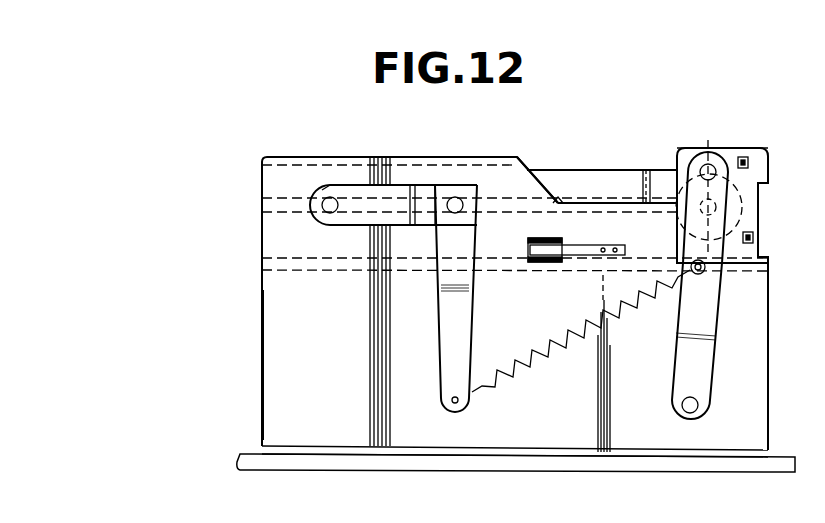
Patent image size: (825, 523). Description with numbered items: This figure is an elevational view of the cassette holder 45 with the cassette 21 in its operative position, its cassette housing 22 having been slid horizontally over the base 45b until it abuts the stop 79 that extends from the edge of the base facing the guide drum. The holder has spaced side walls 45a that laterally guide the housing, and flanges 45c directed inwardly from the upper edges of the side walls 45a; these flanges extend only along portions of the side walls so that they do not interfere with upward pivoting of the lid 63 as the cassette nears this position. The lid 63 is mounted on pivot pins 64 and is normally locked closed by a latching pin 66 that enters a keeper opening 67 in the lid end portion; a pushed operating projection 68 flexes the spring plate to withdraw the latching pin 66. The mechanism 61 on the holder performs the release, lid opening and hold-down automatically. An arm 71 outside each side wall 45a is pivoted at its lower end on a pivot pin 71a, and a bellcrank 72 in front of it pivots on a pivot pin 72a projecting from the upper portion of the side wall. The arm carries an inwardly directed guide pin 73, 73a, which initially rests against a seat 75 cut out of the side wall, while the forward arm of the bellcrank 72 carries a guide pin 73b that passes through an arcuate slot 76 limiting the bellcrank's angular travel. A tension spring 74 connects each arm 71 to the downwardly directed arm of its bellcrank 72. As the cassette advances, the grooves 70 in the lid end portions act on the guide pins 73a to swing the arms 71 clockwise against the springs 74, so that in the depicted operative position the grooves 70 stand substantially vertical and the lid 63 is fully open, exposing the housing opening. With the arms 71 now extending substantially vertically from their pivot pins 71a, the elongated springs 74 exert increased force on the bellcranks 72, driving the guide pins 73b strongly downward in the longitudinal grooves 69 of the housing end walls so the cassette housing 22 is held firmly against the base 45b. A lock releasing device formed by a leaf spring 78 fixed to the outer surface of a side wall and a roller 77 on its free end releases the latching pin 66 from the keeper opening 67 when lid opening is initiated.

The cassette 21 is at (577, 136).
The cassette housing 22 is at (594, 170).
The cassette holder 45 is at (252, 386).
The side wall 45a is at (296, 345).
The base 45b is at (310, 262).
The flange 45c is at (468, 157).
The mechanism 61 is at (757, 112).
The lid 63 is at (745, 150).
The pivot pin 64 is at (745, 205).
The latching pin 66 is at (753, 237).
The upper stop 67 is at (748, 162).
The operating projection 68 is at (793, 284).
The longitudinal groove 69 is at (630, 202).
The groove 70 is at (724, 155).
The arm 71 is at (706, 360).
The pivot pin 71a is at (698, 405).
The bellcrank 72 is at (448, 327).
The pivot pin 72a is at (455, 215).
The guide pin 73 is at (393, 205).
The guide pin 73a is at (708, 170).
The guide pin 73b is at (330, 215).
The tension spring 74 is at (570, 347).
The seat 75 is at (560, 201).
The arcuate slot 76 is at (331, 188).
The roller 77 is at (540, 262).
The leaf spring 78 is at (583, 255).
The stop 79 is at (770, 262).